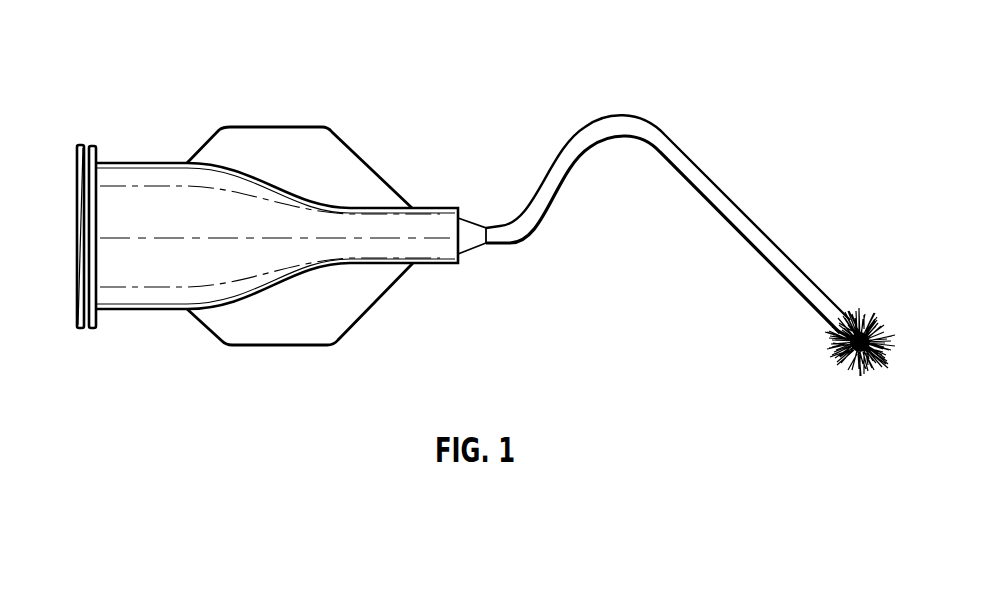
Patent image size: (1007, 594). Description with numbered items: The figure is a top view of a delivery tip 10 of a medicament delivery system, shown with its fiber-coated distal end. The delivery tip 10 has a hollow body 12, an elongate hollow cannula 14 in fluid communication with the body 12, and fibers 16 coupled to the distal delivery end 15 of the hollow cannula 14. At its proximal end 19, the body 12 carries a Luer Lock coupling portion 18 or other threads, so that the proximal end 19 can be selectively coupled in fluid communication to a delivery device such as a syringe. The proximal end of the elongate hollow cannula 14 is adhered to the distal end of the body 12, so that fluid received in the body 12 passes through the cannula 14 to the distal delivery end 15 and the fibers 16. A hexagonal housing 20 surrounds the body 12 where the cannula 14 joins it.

The delivery tip 10 is at (203, 97).
The hollow body 12 is at (150, 306).
The elongate hollow cannula 14 is at (759, 193).
The distal delivery end 15 is at (810, 307).
The fibers 16 is at (887, 304).
The Luer Lock coupling portion 18 is at (83, 233).
The proximal end 19 is at (103, 312).
The hexagonal housing 20 is at (345, 172).